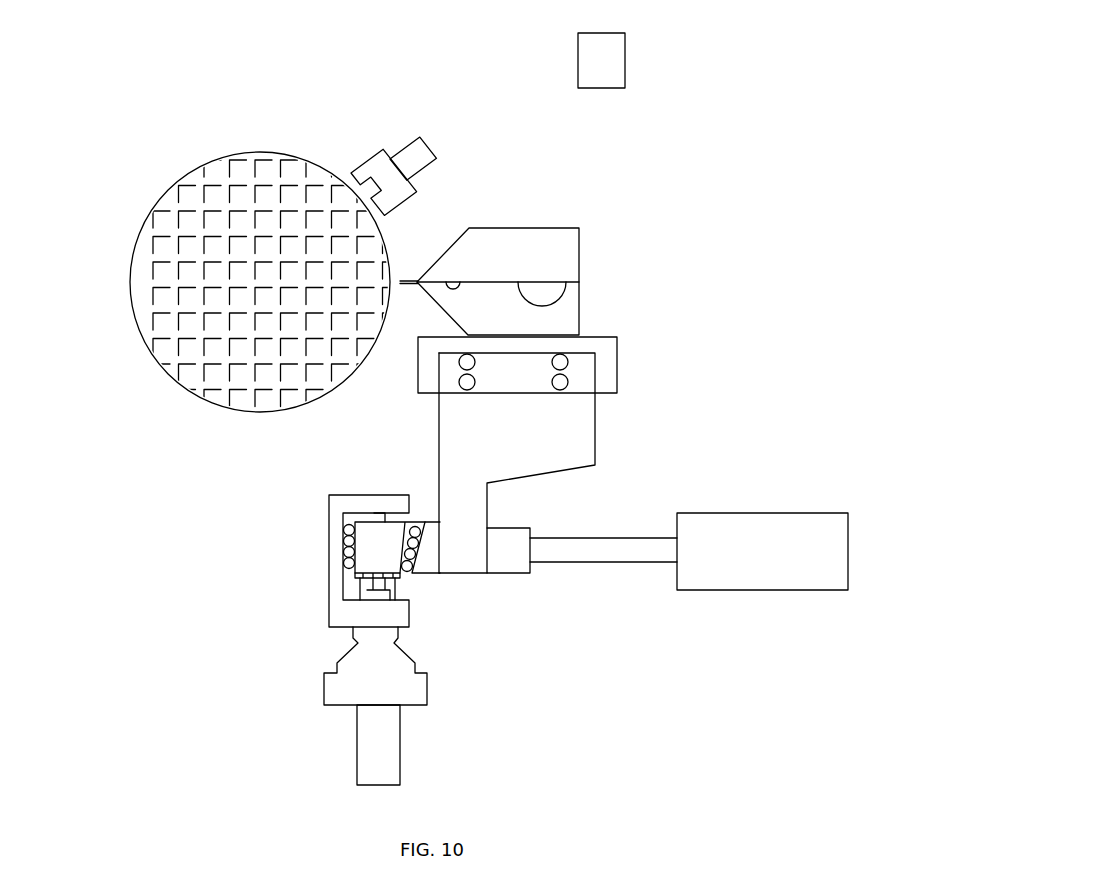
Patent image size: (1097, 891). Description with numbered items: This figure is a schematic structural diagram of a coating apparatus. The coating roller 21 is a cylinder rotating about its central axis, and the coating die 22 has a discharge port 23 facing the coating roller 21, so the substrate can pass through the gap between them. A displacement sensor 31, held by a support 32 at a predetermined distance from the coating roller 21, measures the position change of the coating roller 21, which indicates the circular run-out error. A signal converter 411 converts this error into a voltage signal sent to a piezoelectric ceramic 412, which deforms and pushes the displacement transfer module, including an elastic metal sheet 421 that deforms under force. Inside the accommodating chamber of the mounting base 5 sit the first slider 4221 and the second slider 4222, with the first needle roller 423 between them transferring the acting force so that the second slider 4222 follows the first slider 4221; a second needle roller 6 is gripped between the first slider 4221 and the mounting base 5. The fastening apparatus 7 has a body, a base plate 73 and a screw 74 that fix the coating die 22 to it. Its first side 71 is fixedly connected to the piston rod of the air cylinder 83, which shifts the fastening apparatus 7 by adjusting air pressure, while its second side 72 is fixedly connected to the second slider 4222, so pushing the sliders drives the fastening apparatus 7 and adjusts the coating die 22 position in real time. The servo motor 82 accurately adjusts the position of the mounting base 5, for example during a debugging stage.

The coating roller 21 is at (180, 182).
The displacement sensor 31 is at (372, 155).
The support 32 is at (432, 145).
The coating die 22 is at (525, 227).
The discharge port 23 is at (405, 278).
The base plate 73 is at (617, 343).
The screw 74 is at (560, 363).
The fastening apparatus 7 is at (597, 432).
The second side of fastening apparatus 72 is at (438, 503).
The first side of fastening apparatus 71 is at (488, 527).
The air cylinder 83 is at (808, 513).
The signal converter 411 is at (625, 63).
The mounting base 5 is at (330, 560).
The second needle roller 6 is at (343, 538).
The first slider 4221 is at (365, 528).
The first needle roller 423 is at (418, 518).
The second slider 4222 is at (428, 557).
The elastic metal sheet 421 is at (347, 577).
The piezoelectric ceramic 412 is at (350, 580).
The servo motor 82 is at (402, 737).